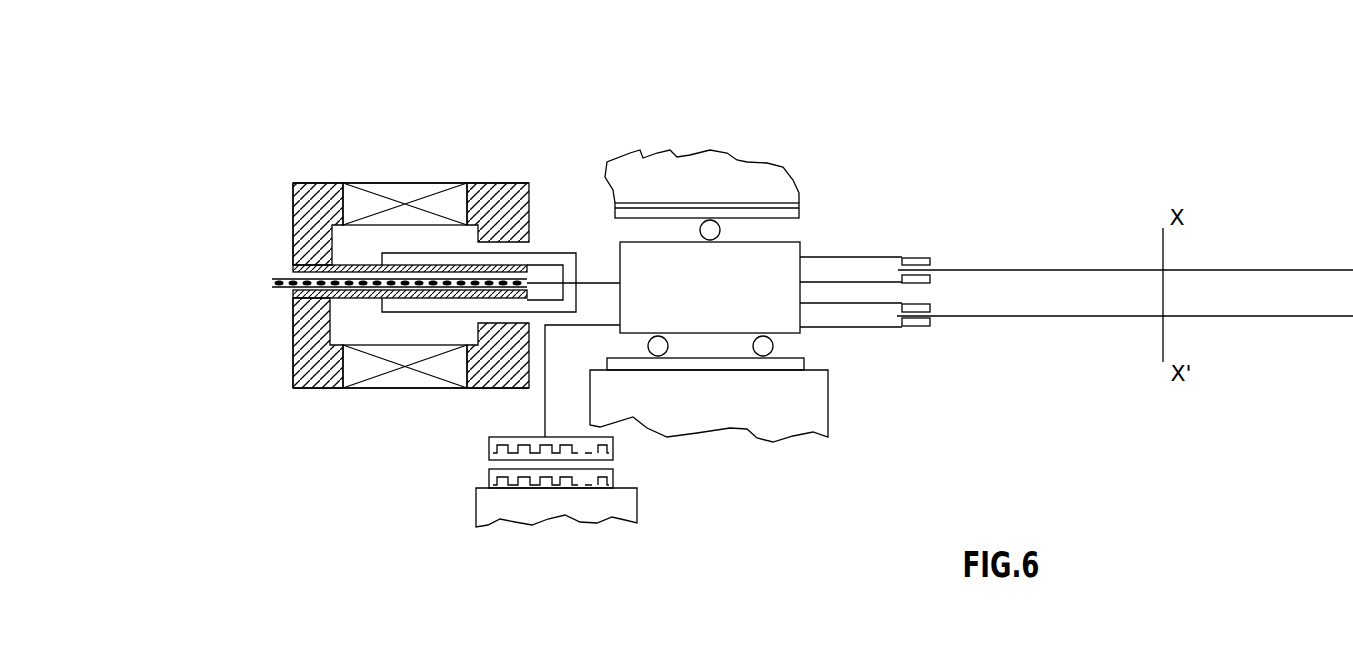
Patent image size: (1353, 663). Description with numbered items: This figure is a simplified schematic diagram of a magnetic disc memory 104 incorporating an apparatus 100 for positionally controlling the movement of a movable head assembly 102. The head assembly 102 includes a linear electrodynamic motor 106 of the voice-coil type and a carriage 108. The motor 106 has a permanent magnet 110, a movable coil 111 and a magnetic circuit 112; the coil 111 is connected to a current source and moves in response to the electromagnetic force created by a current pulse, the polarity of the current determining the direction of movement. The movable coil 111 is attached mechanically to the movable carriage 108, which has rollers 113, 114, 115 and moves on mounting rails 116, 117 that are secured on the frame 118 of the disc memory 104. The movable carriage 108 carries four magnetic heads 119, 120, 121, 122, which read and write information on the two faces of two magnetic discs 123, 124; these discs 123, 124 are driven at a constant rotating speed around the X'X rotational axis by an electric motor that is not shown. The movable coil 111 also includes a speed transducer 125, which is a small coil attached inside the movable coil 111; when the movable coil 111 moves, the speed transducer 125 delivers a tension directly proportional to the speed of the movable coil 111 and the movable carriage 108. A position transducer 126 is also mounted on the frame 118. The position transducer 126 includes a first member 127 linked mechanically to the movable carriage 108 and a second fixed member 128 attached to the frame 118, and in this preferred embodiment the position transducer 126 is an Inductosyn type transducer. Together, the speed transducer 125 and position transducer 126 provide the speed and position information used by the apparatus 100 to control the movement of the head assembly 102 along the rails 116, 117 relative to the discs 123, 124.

The apparatus 100 is at (337, 410).
The head assembly 102 is at (812, 240).
The magnetic disc memory 104 is at (574, 98).
The linear electrodynamic motor 106 is at (280, 247).
The carriage 108 is at (800, 332).
The permanent magnet 110 is at (418, 183).
The movable coil 111 is at (573, 254).
The magnetic circuit 112 is at (292, 325).
The roller 113 is at (700, 228).
The roller 114 is at (648, 346).
The roller 115 is at (753, 346).
The mounting rail 116 is at (800, 207).
The mounting rail 117 is at (806, 365).
The frame 118 is at (748, 162).
The magnetic head 119 is at (930, 258).
The magnetic head 120 is at (930, 282).
The magnetic head 121 is at (930, 308).
The magnetic head 122 is at (930, 323).
The magnetic disc 123 is at (1102, 270).
The magnetic disc 124 is at (1082, 318).
The speed transducer 125 is at (272, 284).
The position transducer 126 is at (488, 475).
The first member 127 is at (489, 447).
The second fixed member 128 is at (613, 477).